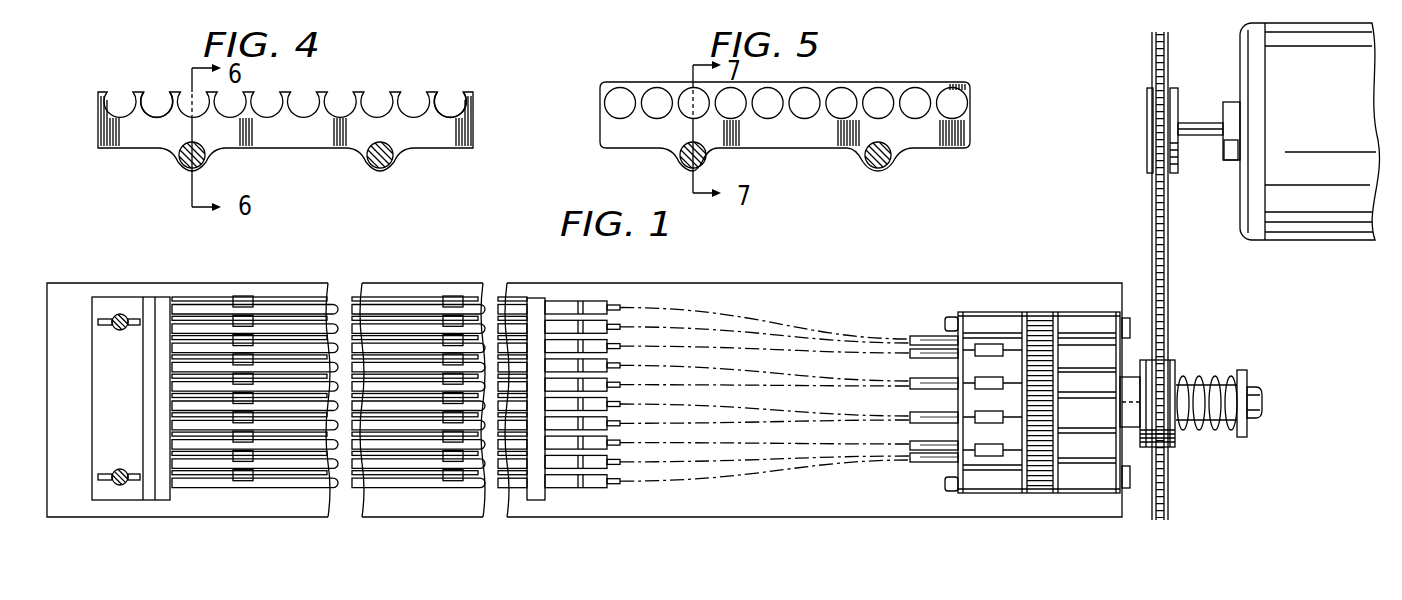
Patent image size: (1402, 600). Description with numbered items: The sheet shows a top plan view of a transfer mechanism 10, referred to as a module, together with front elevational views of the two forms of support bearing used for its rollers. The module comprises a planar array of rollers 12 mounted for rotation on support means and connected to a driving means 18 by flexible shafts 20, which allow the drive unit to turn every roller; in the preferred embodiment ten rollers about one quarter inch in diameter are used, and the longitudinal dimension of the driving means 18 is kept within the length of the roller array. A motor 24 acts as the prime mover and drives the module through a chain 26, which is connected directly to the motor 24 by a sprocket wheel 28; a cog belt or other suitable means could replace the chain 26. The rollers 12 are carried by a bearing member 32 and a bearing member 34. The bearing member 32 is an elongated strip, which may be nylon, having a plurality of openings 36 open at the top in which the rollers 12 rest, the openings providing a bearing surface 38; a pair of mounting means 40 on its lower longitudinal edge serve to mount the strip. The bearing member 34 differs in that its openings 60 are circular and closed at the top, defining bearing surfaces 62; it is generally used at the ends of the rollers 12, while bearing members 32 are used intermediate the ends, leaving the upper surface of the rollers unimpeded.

In FIG. 1, the transfer mechanism 10 is at (755, 517).
In FIG. 1, the rollers 12 is at (380, 305).
In FIG. 1, the driving means 18 is at (1010, 498).
In FIG. 1, the flexible shafts 20 is at (858, 462).
In FIG. 1, the motor 24 is at (1335, 117).
In FIG. 1, the chain 26 is at (1153, 218).
In FIG. 1, the sprocket wheel 28 is at (1147, 118).
In FIG. 4, the bearing member 32 is at (310, 144).
In FIG. 1, the bearing member 32 is at (455, 500).
In FIG. 5, the bearing member 34 is at (806, 145).
In FIG. 1, the bearing member 34 is at (538, 498).
In FIG. 4, the openings 36 is at (450, 103).
In FIG. 4, the bearing surface 38 is at (148, 100).
In FIG. 4, the mounting means 40 is at (178, 175).
In FIG. 5, the openings 60 is at (840, 100).
In FIG. 5, the bearing surfaces 62 is at (915, 100).